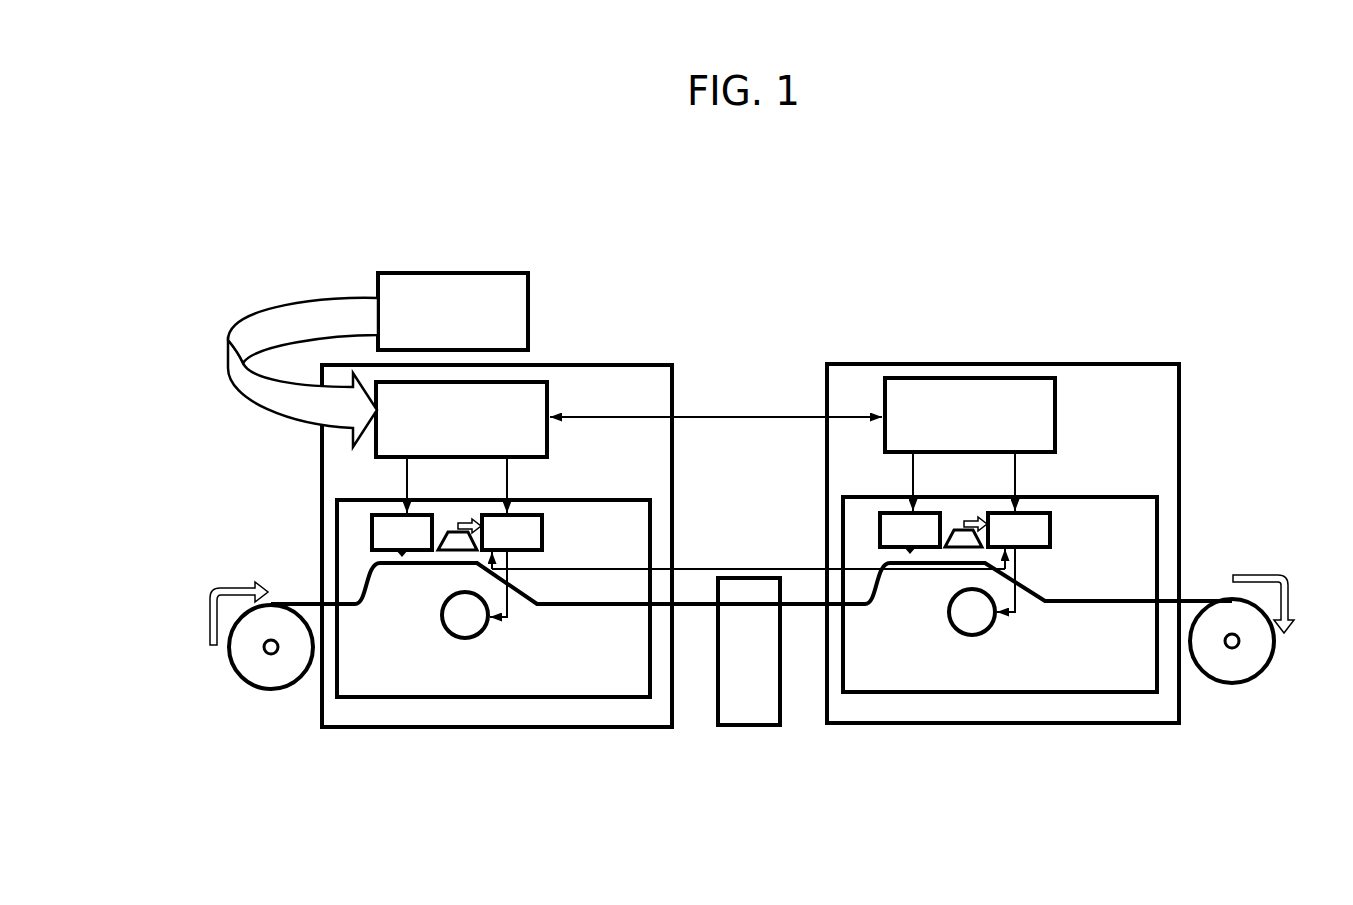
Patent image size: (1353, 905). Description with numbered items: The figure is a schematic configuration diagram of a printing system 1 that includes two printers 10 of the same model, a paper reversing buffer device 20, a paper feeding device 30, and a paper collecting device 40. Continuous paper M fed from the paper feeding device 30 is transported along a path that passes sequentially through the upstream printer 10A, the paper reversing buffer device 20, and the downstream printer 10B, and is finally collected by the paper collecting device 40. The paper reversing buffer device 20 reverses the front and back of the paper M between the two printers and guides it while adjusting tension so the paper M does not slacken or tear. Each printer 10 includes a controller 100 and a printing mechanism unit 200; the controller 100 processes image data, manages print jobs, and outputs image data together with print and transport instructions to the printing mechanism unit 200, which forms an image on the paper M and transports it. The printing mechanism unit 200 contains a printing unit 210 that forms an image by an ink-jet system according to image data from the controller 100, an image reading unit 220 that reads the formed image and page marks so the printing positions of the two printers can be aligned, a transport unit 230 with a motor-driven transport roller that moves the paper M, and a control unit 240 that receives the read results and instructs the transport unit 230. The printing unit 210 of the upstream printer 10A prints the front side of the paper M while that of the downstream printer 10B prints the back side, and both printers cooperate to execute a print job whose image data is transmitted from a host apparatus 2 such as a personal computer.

The printing system 1 is at (763, 262).
The host apparatus 2 is at (462, 272).
The printer 10 is at (738, 513).
The upstream printer 10A is at (633, 350).
The downstream printer 10B is at (1083, 343).
The paper reversing buffer device 20 is at (745, 738).
The paper feeding device 30 is at (280, 703).
The paper collecting device 40 is at (1233, 698).
The controller 100 is at (1057, 413).
The printing mechanism unit 200 is at (922, 693).
The printing unit 210 is at (880, 533).
The image reading unit 220 is at (960, 530).
The transport unit 230 is at (972, 636).
The control unit 240 is at (1052, 528).
The paper M is at (353, 603).